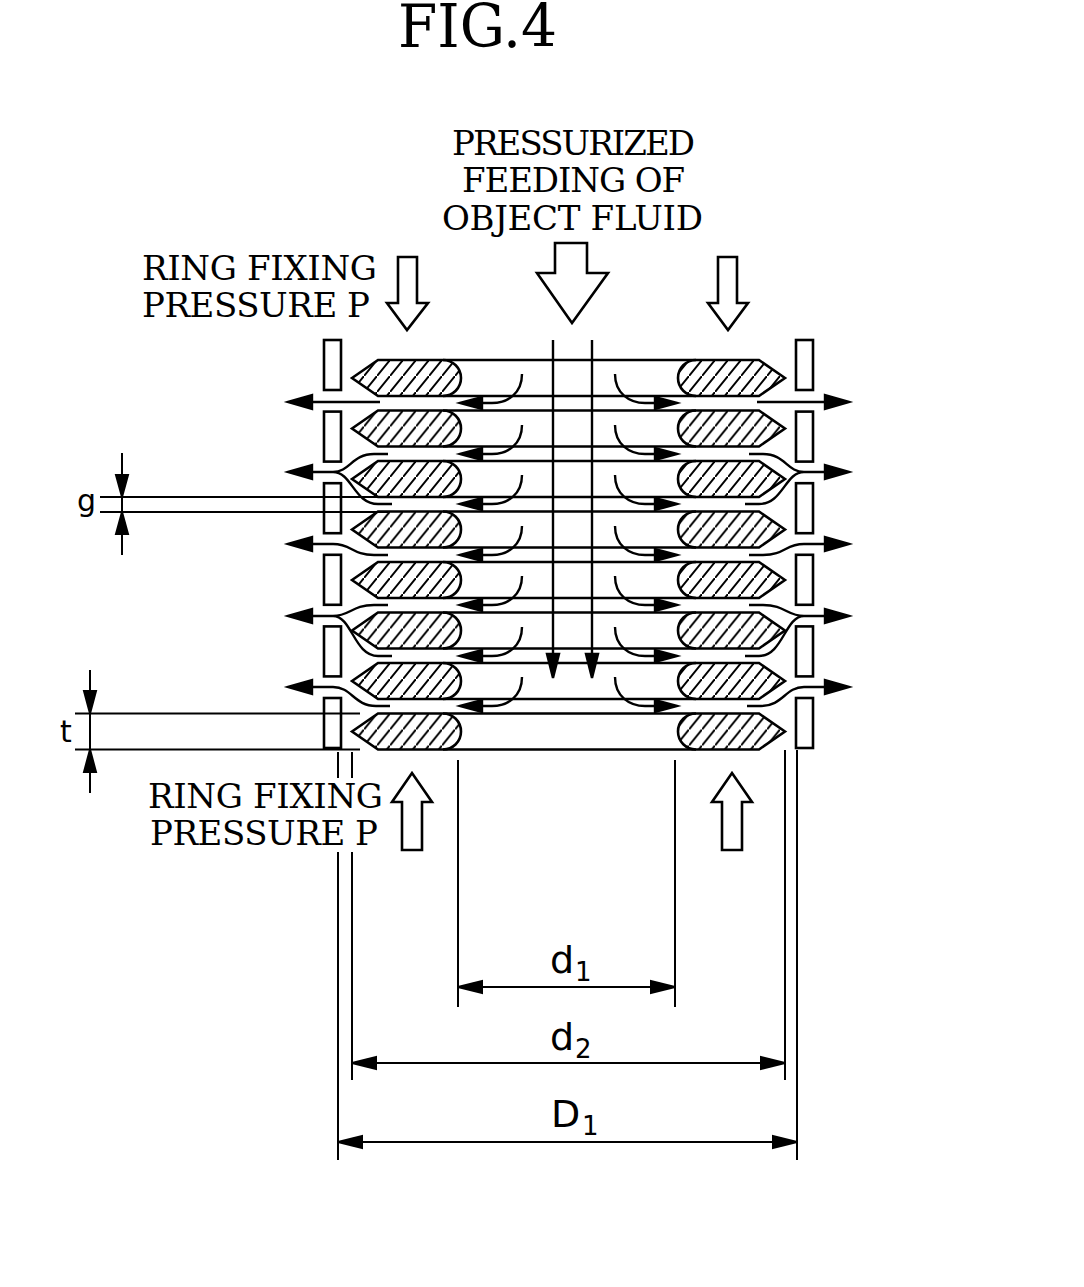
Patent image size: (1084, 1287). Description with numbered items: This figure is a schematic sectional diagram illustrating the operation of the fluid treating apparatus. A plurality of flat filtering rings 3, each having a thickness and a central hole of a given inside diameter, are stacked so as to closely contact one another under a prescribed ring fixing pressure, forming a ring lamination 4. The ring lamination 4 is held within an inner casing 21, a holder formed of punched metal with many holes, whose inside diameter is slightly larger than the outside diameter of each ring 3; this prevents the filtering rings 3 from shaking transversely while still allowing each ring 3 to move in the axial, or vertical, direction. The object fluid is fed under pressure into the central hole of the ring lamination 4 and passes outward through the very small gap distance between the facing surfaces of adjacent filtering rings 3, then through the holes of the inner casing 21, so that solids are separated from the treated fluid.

The filtering ring 3 is at (749, 360).
The inner casing 21 is at (812, 347).
The ring lamination 4 is at (738, 752).